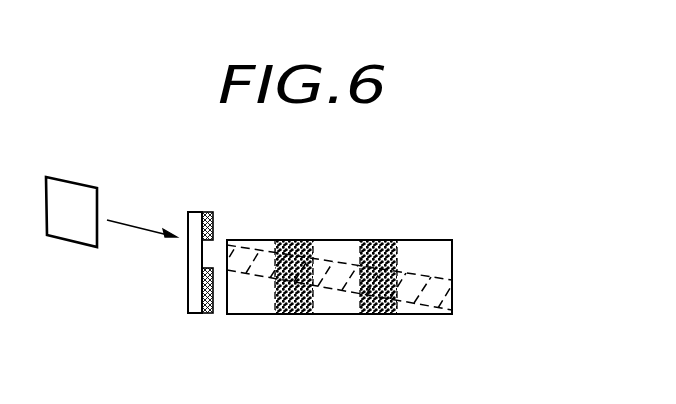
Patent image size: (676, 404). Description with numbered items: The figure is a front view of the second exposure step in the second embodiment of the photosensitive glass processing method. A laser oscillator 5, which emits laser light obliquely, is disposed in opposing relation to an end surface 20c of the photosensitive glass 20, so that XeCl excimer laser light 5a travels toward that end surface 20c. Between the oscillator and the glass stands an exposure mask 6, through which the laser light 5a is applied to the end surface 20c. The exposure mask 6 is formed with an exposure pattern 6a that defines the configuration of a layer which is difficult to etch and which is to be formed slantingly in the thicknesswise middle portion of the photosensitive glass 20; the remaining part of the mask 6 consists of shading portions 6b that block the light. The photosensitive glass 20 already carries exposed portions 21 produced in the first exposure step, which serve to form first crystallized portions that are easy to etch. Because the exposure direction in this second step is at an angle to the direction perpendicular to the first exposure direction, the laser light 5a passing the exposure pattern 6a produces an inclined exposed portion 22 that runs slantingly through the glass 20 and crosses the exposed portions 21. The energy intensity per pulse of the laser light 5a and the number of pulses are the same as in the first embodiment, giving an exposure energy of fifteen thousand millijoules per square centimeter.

The laser oscillator 5 is at (70, 180).
The XeCl excimer laser light 5a is at (144, 228).
The exposure mask 6 is at (270, 216).
The exposure pattern 6a is at (216, 252).
The shading portions 6b is at (215, 295).
The photosensitive glass 20 is at (459, 251).
The end surface 20c is at (226, 303).
The exposed portions 21 is at (305, 317).
The inclined exposed portion 22 is at (440, 296).